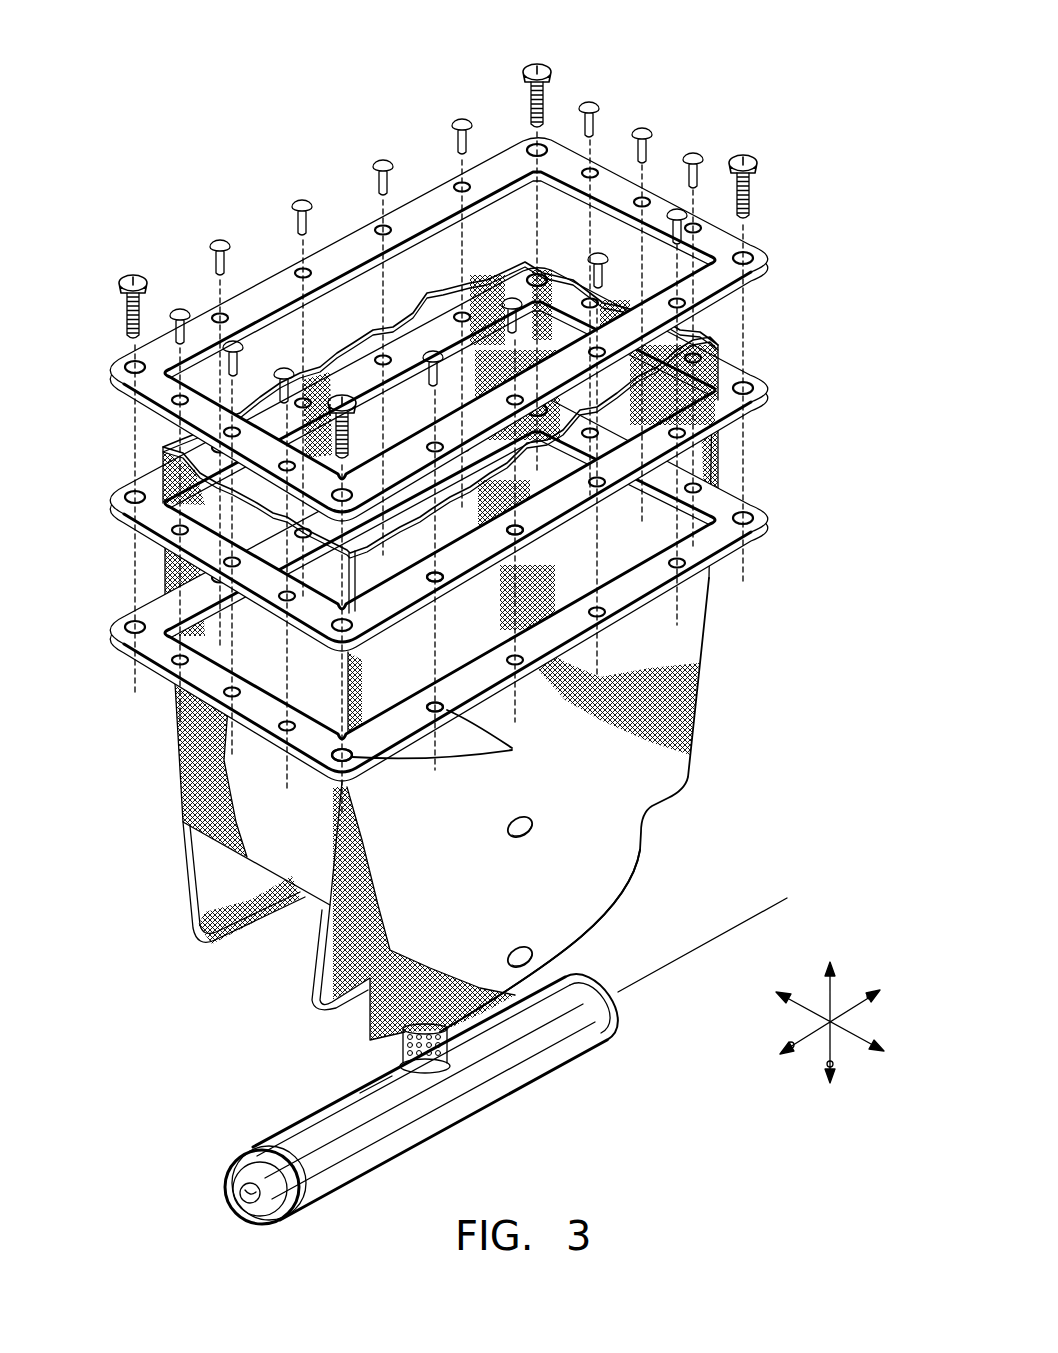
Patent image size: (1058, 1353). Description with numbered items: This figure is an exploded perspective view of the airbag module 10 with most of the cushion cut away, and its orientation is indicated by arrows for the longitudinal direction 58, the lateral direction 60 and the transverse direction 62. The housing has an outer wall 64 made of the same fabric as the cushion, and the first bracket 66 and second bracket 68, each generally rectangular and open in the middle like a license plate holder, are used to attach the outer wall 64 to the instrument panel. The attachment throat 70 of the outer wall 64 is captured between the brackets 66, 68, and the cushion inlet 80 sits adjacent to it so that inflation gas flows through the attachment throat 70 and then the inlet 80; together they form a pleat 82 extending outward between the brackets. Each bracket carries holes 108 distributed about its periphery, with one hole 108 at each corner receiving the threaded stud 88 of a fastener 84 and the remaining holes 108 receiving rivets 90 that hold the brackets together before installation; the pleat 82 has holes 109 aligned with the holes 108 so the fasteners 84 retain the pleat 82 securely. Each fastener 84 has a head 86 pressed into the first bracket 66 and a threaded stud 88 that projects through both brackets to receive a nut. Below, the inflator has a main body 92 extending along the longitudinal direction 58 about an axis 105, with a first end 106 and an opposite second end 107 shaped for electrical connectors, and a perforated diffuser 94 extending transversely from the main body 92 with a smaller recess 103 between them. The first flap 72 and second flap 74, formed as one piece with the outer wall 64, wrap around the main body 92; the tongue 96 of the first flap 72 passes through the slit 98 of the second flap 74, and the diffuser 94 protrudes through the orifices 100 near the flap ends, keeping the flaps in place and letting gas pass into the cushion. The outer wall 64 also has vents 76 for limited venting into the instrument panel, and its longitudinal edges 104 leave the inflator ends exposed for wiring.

The airbag module 10 is at (705, 128).
The longitudinal direction 58 is at (852, 1015).
The lateral direction 60 is at (848, 1052).
The transverse direction 62 is at (842, 975).
The outer wall 64 is at (770, 575).
The first bracket 66 is at (790, 252).
The second bracket 68 is at (790, 533).
The attachment throat 70 is at (608, 510).
The first flap 72 is at (418, 809).
The second flap 74 is at (157, 860).
The vent 76 is at (528, 818).
The inlet 80 is at (615, 475).
The pleat 82 is at (790, 398).
The fastener 84 is at (454, 254).
The head 86 is at (522, 76).
The threaded stud 88 is at (531, 108).
The rivet 90 is at (642, 128).
The main body 92 is at (457, 1060).
The diffuser 94 is at (400, 1048).
The tongue 96 is at (558, 893).
The slit 98 is at (215, 845).
The orifice 100 is at (508, 950).
The recess 103 is at (364, 1084).
The longitudinal edge 104 is at (312, 920).
The axis 105 is at (725, 930).
The first end 106 is at (224, 1192).
The second end 107 is at (612, 1008).
The hole 108 is at (170, 265).
The hole 109 is at (445, 578).